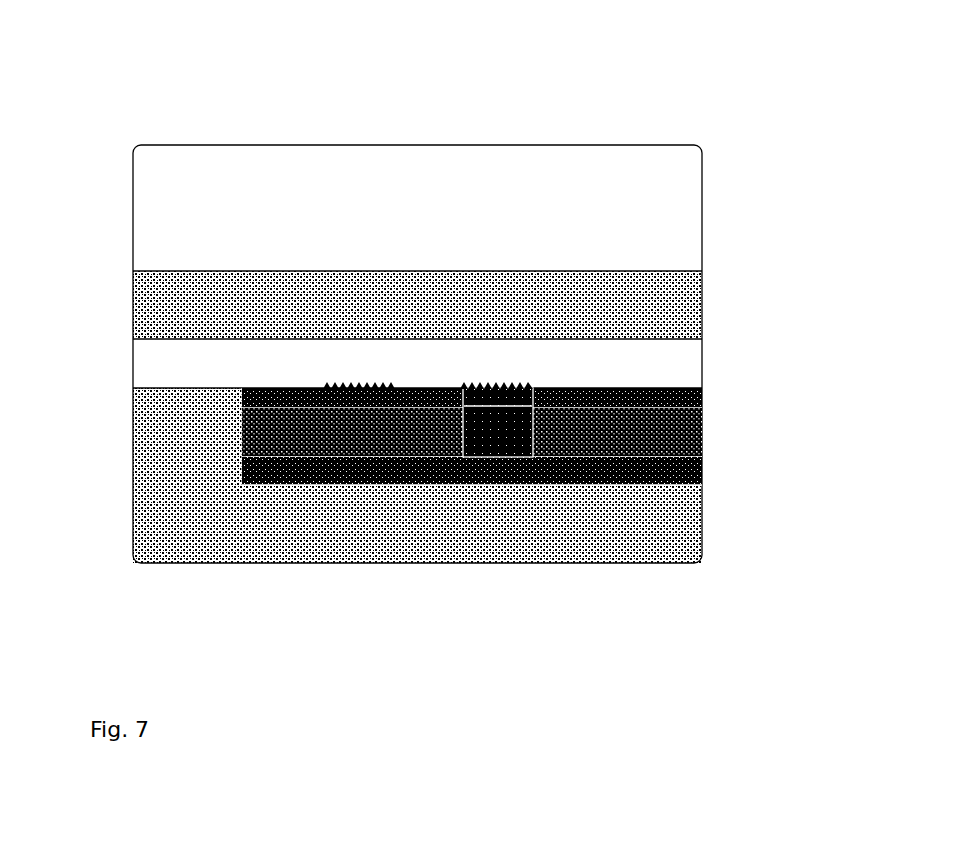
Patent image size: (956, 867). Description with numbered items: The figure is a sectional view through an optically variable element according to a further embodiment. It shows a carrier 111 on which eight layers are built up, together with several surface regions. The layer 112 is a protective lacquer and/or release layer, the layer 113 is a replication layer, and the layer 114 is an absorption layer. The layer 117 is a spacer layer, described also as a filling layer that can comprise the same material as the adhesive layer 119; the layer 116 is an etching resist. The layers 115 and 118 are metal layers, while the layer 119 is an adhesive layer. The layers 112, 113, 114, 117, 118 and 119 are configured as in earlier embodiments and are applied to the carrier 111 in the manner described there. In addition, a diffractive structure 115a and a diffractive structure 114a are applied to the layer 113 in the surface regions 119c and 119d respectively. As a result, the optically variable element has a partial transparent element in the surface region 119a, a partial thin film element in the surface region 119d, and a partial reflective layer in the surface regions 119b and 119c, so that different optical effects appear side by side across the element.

The carrier 111 is at (672, 273).
The protective lacquer and/or release layer 112 is at (133, 316).
The replication layer 113 is at (673, 365).
The absorption layer 114 is at (177, 392).
The diffractive structure 114a is at (510, 378).
The metal layer 115 is at (700, 400).
The diffractive structure 115a is at (370, 378).
The etching resist 116 is at (678, 427).
The spacer layer 117 is at (487, 405).
The metal layer 118 is at (702, 478).
The adhesive layer 119 is at (670, 517).
The surface region 119a is at (198, 478).
The surface regions 119b is at (280, 415).
The surface region 119c is at (353, 453).
The surface region 119d is at (497, 460).